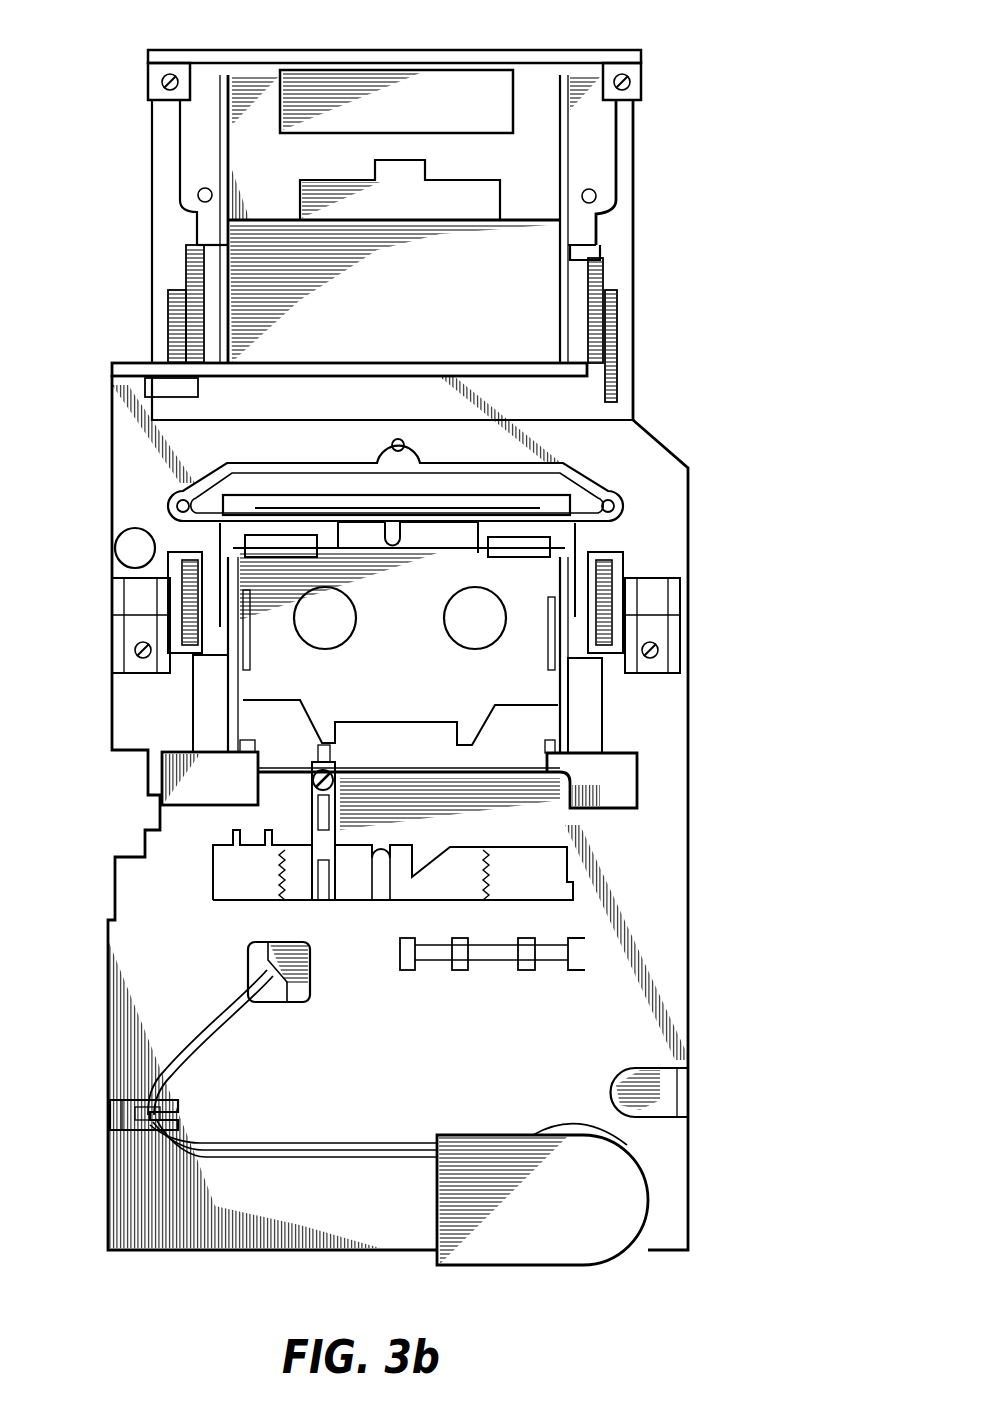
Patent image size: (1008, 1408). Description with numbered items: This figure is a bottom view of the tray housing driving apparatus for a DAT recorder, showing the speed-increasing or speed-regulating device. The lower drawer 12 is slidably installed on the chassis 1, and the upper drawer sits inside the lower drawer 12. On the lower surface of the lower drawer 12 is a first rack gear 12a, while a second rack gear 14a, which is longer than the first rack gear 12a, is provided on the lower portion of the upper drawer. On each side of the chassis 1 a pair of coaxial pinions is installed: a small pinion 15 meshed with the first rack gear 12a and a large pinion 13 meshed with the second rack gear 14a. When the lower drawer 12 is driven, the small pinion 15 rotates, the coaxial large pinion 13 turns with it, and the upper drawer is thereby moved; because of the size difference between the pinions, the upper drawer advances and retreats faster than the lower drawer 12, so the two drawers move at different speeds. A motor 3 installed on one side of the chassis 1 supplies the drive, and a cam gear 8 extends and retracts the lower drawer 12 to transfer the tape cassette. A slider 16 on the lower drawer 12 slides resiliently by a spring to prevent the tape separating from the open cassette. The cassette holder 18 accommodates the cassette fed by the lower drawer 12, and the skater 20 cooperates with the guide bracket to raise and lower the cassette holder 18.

The chassis 1 is at (660, 458).
The motor 3 is at (577, 1128).
The cam gear 8 is at (450, 884).
The lower drawer 12 is at (600, 58).
The first rack gear 12a is at (168, 320).
The large pinion 13 is at (187, 560).
The second rack gear 14a is at (186, 265).
The small pinion 15 is at (175, 620).
The slider 16 is at (553, 242).
The cassette holder 18 is at (515, 685).
The skater 20 is at (535, 815).